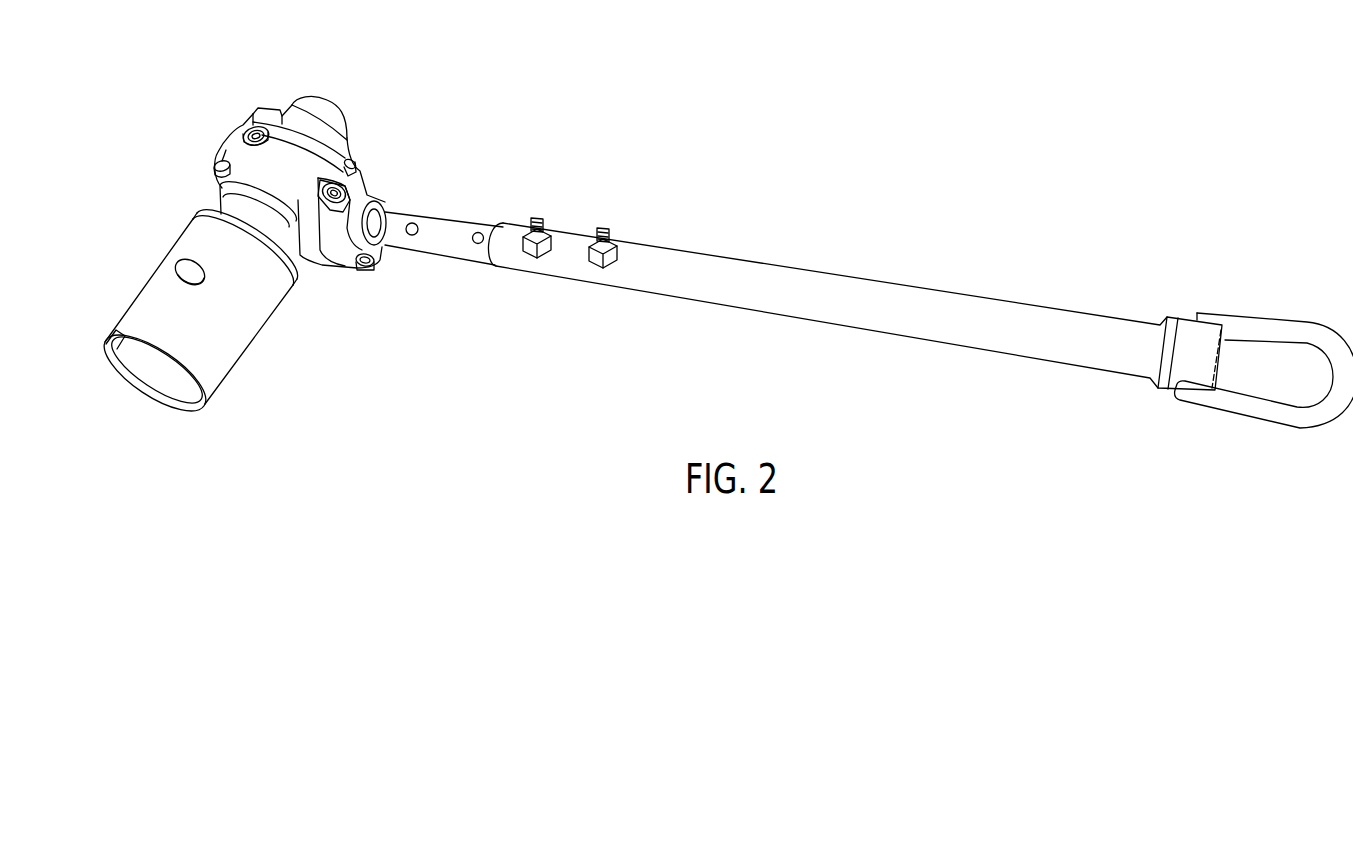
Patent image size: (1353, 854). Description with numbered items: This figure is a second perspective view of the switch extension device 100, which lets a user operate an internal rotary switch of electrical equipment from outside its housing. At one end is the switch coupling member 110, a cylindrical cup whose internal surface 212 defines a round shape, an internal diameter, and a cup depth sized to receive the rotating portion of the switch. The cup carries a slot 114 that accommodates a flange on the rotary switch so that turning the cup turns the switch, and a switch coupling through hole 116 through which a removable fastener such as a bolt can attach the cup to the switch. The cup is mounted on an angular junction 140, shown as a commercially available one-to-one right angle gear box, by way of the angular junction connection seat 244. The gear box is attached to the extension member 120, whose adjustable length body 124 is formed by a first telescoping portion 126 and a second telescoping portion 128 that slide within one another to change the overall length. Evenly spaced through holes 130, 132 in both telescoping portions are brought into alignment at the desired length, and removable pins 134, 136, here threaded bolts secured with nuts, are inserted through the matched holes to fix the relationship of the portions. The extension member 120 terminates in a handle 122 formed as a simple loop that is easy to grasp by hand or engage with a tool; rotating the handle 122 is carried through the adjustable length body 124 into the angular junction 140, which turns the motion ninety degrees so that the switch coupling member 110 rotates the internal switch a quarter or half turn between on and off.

The switch extension device 100 is at (787, 203).
The switch coupling member 110 is at (250, 337).
The slot 114 is at (113, 358).
The switch coupling through hole 116 is at (188, 270).
The extension member 120 is at (1115, 371).
The handle 122 is at (1297, 425).
The adjustable length body 124 is at (863, 285).
The first telescoping portion 126 is at (808, 318).
The second telescoping portion 128 is at (418, 256).
The through hole 130 is at (480, 231).
The through hole 132 is at (415, 221).
The removable pin 134 is at (603, 228).
The removable pin 136 is at (537, 218).
The angular junction 140 is at (324, 106).
The internal surface 212 is at (180, 398).
The angular junction connection seat 244 is at (238, 203).